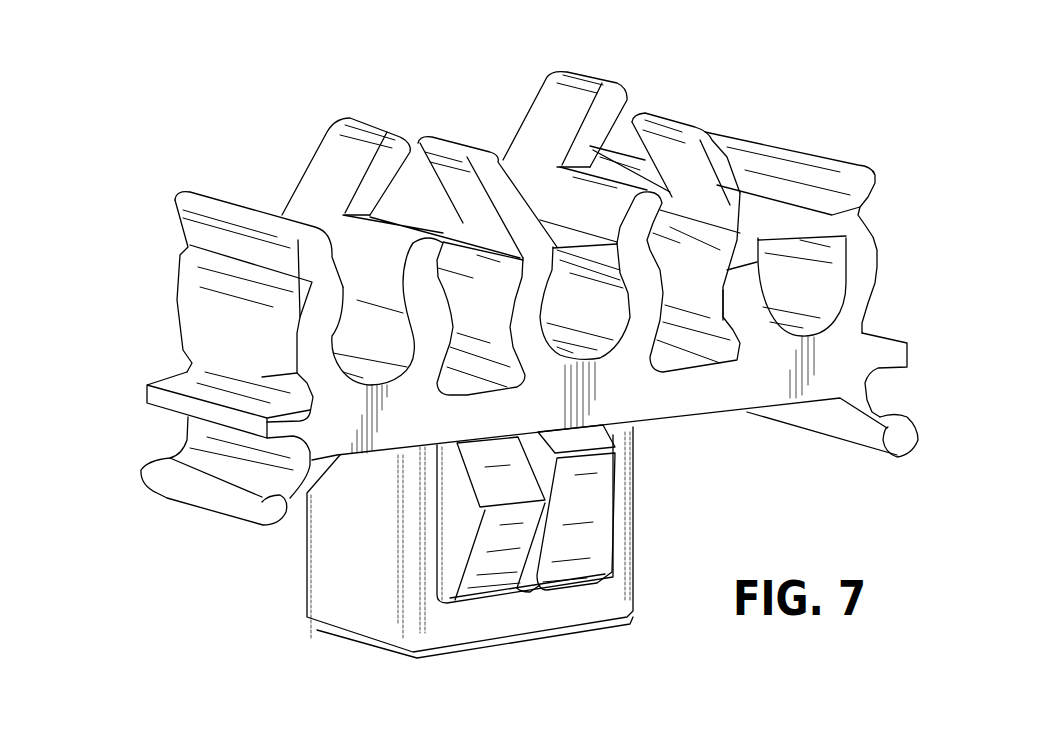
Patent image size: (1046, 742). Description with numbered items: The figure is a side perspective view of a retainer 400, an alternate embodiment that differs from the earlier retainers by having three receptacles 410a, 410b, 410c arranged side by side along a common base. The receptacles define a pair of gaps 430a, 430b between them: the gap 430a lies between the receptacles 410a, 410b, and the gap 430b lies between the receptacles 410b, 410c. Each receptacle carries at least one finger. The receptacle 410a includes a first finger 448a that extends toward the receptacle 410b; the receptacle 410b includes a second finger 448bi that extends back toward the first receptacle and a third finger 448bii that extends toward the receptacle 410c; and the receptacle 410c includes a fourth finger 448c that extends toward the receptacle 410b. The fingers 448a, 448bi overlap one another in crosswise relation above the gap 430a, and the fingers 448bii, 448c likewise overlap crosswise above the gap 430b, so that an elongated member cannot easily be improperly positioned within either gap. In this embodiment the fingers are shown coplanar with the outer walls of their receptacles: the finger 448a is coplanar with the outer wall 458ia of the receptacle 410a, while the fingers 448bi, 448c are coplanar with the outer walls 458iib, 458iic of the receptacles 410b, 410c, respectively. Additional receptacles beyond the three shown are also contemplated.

The retainer 400 is at (860, 97).
The receptacle 410a is at (281, 276).
The receptacle 410b is at (676, 221).
The receptacle 410c is at (798, 243).
The first finger 448a is at (353, 140).
The second finger 448bi is at (443, 176).
The third finger 448bii is at (566, 100).
The fourth finger 448c is at (672, 162).
The outer wall 458ia is at (173, 303).
The outer wall 458iib is at (653, 300).
The outer wall 458iic is at (857, 288).
The gap 430a is at (480, 364).
The gap 430b is at (712, 343).